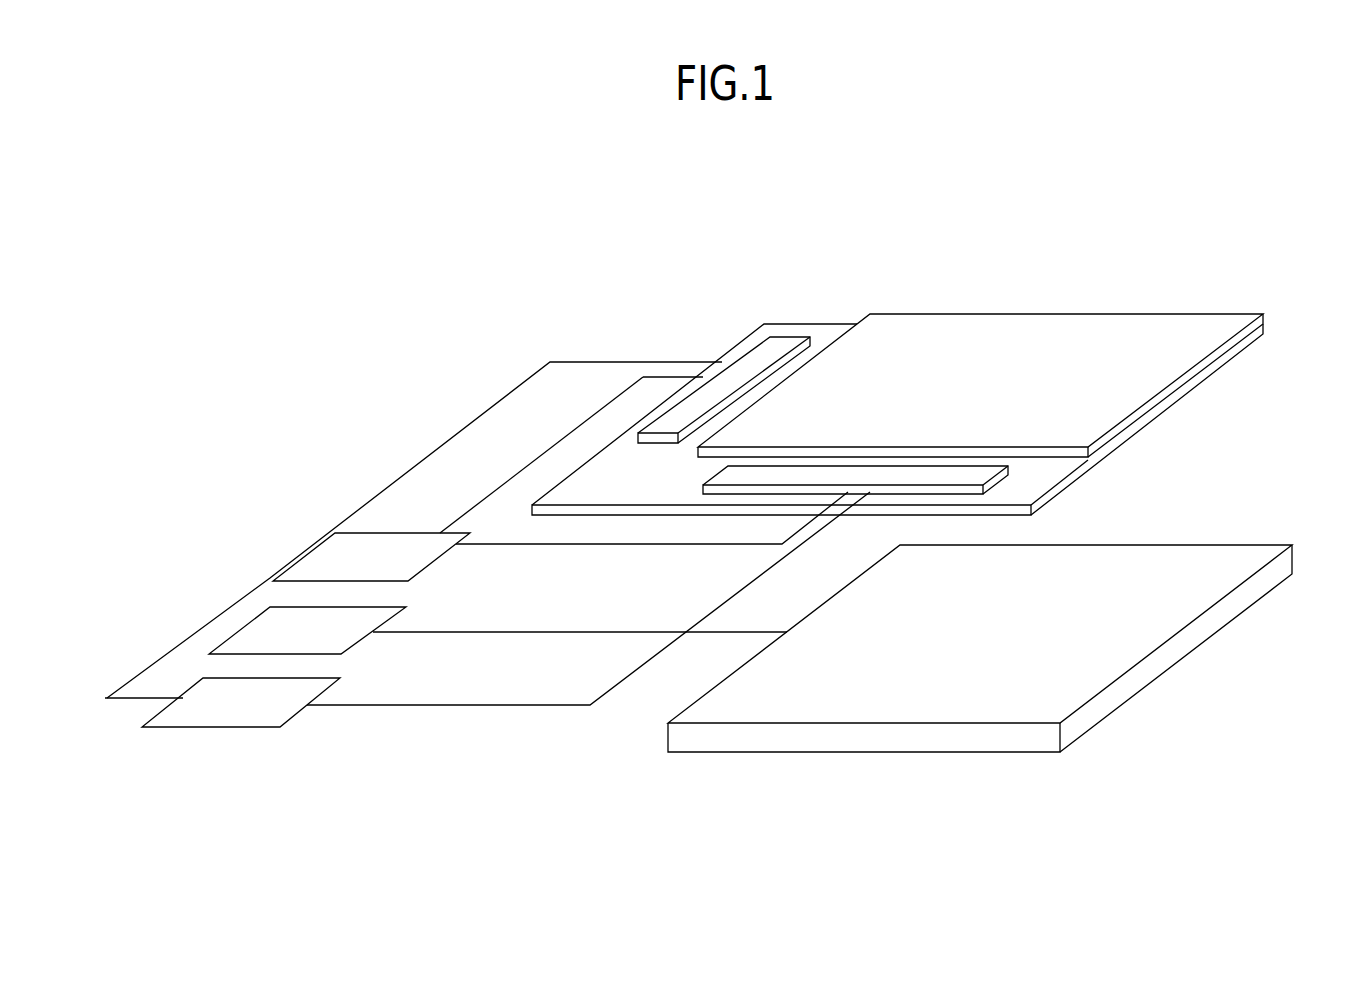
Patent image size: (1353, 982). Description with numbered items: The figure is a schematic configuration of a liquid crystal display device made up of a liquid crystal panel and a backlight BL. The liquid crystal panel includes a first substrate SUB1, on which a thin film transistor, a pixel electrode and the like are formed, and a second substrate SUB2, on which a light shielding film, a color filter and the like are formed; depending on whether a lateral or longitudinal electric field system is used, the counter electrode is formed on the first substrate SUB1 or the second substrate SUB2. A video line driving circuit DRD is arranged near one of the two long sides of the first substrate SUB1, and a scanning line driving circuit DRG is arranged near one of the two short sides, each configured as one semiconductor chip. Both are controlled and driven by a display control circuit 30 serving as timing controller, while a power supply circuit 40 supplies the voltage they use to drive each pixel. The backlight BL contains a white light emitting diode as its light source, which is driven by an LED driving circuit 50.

The second substrate SUB2 is at (988, 330).
The first substrate SUB1 is at (1027, 480).
The scanning line driving circuit DRG is at (752, 360).
The video line driving circuit DRD is at (730, 472).
The backlight BL is at (1172, 558).
The display control circuit 30 is at (343, 563).
The LED driving circuit 50 is at (277, 632).
The power supply circuit 40 is at (213, 698).